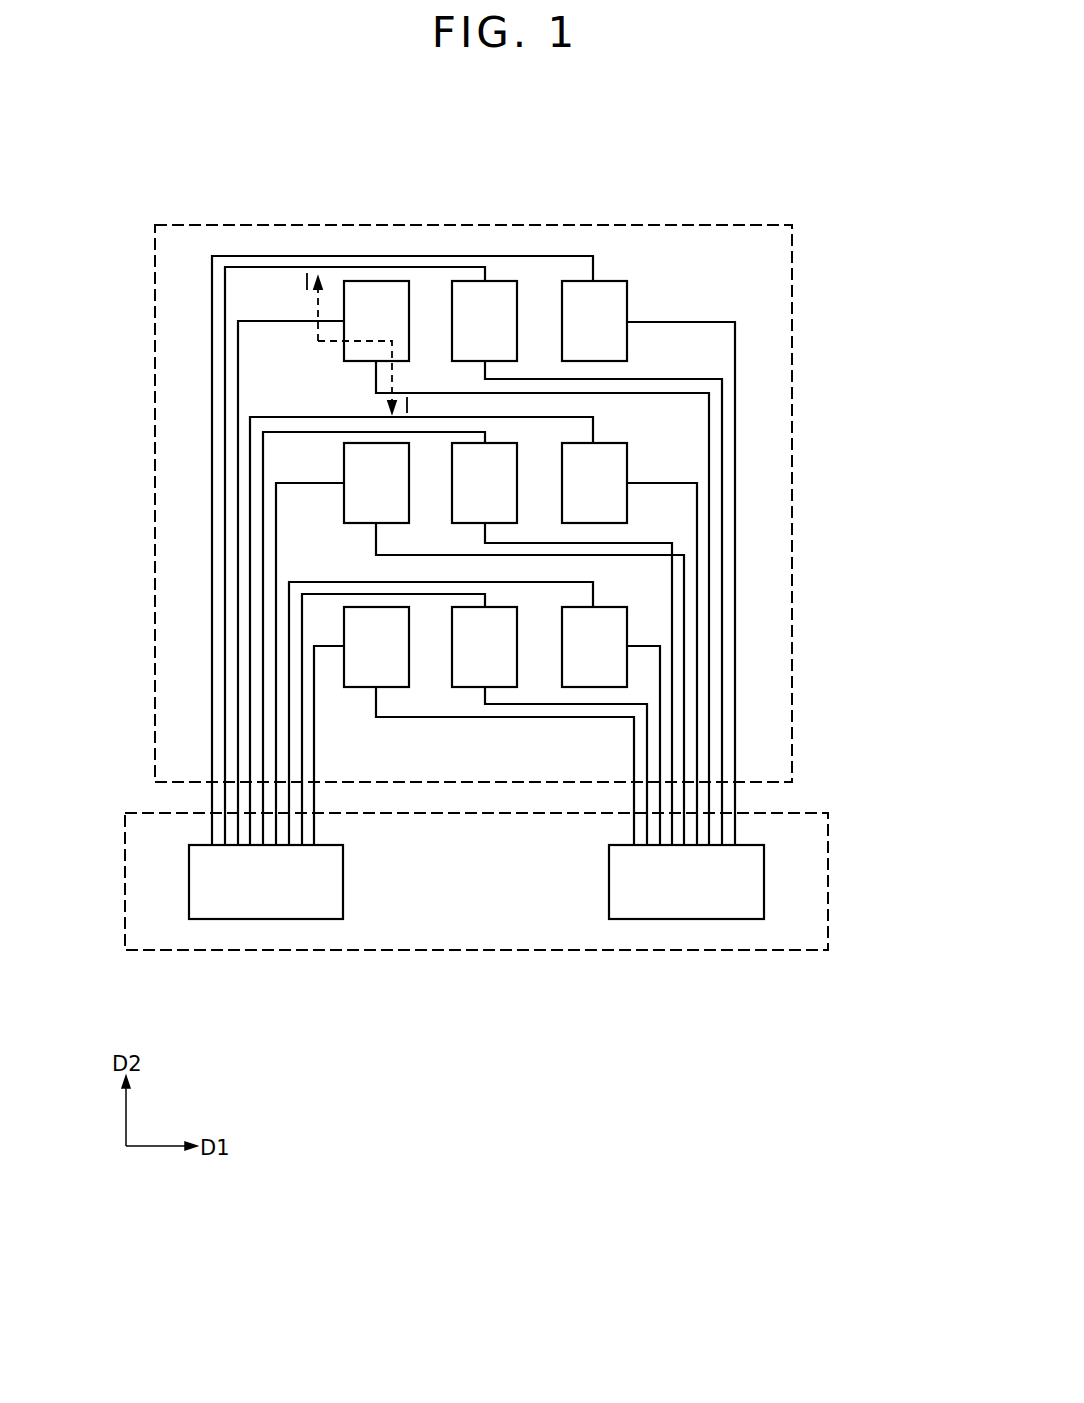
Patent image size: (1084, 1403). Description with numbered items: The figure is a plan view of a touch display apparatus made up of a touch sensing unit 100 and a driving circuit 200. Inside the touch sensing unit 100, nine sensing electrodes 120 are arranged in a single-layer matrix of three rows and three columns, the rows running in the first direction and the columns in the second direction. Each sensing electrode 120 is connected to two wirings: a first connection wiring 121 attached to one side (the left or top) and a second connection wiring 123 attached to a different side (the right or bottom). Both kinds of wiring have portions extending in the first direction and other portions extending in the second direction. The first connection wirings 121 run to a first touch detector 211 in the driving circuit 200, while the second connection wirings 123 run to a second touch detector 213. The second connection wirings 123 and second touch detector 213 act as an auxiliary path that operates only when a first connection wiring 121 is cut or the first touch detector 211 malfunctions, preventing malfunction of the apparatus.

The touch sensing unit 100 is at (792, 500).
The sensing electrodes 120 is at (613, 287).
The first connection wirings 121 is at (593, 267).
The second connection wirings 123 is at (677, 322).
The driving circuit 200 is at (828, 887).
The first touch detector 211 is at (266, 882).
The second touch detector 213 is at (686, 882).